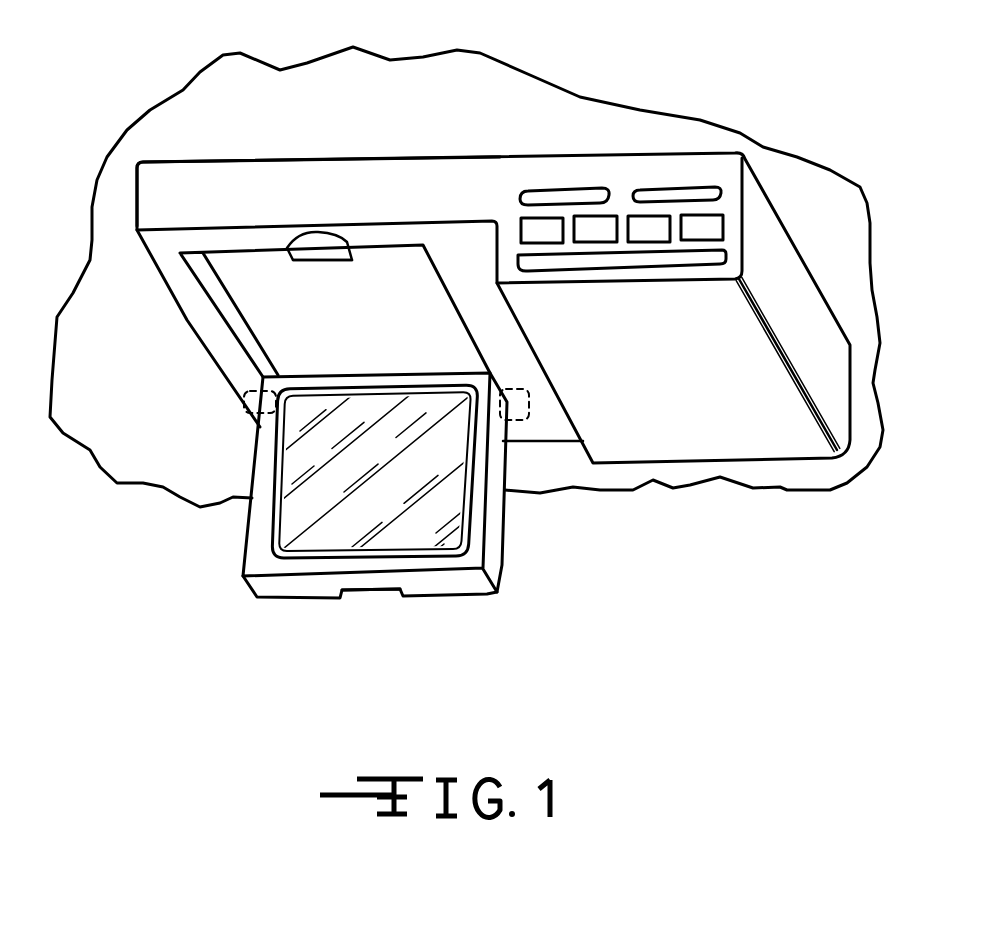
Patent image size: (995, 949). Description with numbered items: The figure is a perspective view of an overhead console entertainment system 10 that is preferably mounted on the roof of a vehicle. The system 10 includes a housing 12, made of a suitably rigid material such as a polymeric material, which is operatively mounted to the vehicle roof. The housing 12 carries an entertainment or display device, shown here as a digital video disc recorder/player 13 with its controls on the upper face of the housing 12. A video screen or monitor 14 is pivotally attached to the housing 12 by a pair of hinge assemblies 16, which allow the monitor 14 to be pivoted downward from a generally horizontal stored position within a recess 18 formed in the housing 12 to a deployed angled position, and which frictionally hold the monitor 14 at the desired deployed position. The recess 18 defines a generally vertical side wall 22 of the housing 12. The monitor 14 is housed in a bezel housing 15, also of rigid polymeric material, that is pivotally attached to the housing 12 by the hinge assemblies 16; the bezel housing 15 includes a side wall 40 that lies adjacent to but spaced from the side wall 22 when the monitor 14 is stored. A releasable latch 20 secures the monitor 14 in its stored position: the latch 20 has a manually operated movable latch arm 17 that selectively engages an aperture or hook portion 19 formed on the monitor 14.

The overhead console entertainment system 10 is at (560, 108).
The housing 12 is at (315, 182).
The digital video disc recorder/player 13 is at (658, 183).
The video screen or monitor 14 is at (490, 559).
The bezel housing 15 is at (257, 549).
The hinge assembly 16 is at (240, 401).
The latch arm 17 is at (333, 260).
The recess 18 is at (377, 272).
The aperture or hook portion 19 is at (373, 590).
The releasable latch 20 is at (323, 241).
The side wall 22 is at (268, 507).
The side wall 40 is at (257, 521).